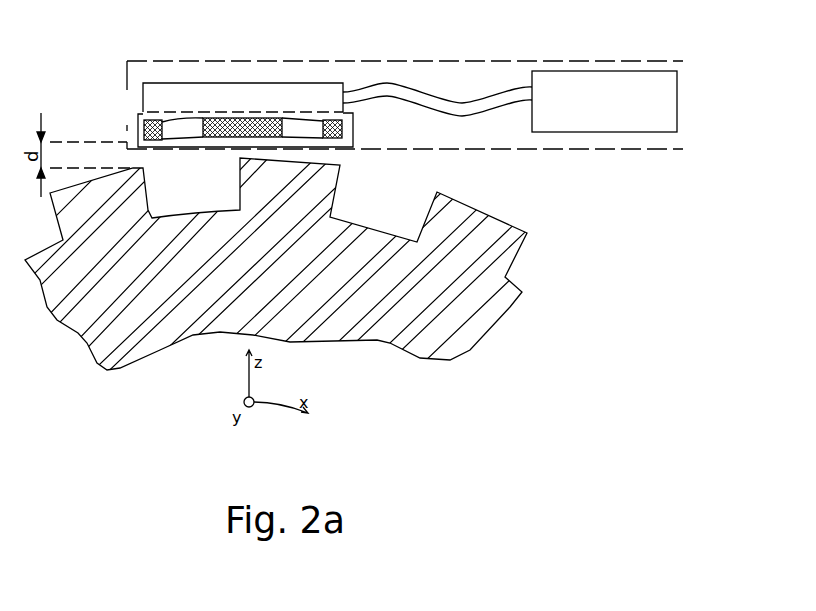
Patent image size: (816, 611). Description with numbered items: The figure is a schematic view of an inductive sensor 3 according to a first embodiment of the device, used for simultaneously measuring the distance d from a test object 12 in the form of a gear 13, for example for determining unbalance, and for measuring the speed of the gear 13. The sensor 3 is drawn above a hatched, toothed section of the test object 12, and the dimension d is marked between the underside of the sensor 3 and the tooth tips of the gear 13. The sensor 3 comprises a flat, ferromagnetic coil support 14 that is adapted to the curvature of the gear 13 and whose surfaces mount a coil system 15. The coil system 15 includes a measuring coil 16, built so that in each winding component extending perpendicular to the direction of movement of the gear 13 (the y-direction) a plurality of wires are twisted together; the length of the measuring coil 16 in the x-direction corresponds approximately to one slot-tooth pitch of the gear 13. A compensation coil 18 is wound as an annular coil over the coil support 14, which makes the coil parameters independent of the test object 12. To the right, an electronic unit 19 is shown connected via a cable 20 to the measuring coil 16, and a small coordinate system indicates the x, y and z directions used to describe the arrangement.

The sensor 3 is at (482, 60).
The test object 12 is at (328, 270).
The gear 13 is at (500, 222).
The coil support 14 is at (235, 100).
The coil system 15 is at (353, 125).
The measuring coil 16 is at (136, 130).
The compensation coil 18 is at (236, 128).
The electronic unit 19 is at (585, 123).
The cable 20 is at (375, 90).